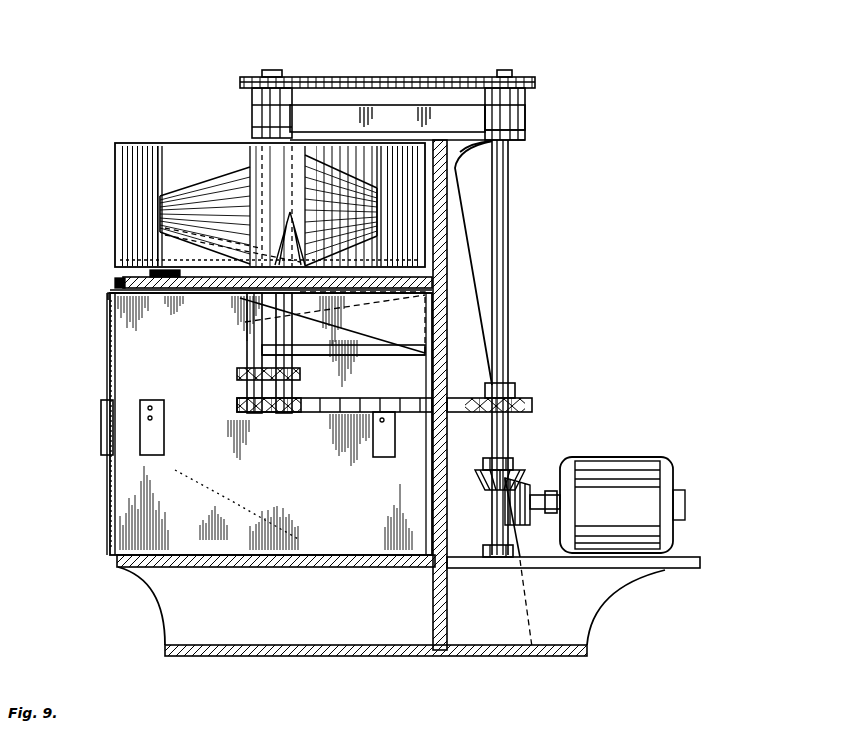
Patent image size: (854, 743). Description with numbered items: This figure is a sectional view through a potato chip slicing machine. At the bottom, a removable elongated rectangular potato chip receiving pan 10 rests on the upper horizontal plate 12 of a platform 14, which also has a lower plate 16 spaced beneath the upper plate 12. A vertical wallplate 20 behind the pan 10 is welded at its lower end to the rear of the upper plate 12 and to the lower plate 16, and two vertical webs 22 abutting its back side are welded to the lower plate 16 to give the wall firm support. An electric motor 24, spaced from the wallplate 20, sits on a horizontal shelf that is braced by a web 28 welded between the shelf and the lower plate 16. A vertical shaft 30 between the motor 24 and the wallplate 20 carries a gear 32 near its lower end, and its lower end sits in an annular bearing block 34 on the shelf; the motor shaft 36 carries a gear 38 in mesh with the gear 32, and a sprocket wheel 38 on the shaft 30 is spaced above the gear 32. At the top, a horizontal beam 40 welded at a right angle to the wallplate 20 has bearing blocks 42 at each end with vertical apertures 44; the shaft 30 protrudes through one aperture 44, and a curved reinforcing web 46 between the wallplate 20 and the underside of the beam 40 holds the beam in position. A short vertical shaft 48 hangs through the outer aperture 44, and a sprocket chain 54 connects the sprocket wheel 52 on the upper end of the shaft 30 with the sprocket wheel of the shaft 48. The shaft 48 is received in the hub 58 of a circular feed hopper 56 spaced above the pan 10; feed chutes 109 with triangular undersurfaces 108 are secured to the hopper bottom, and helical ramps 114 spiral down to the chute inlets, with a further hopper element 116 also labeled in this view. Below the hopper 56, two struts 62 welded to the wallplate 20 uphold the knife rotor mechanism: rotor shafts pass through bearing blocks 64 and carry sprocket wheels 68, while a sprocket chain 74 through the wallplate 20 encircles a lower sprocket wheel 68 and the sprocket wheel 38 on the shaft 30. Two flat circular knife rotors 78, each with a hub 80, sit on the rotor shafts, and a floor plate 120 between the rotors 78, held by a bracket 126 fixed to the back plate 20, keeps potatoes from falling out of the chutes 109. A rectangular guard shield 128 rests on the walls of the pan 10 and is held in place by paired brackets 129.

The potato chip receiving pan 10 is at (110, 534).
The upper horizontal plate 12 is at (216, 565).
The platform 14 is at (142, 611).
The lower plate 16 is at (330, 656).
The wallplate 20 is at (446, 332).
The vertical webs 22 is at (461, 190).
The electric motor 24 is at (622, 458).
The web 28 is at (600, 603).
The vertical shaft 30 is at (505, 318).
The gear 32 is at (510, 462).
The annular bearing block 34 is at (483, 550).
The motor shaft 36 is at (548, 512).
The gear / sprocket wheel 38 is at (240, 402).
The horizontal beam 40 is at (378, 107).
The bearing blocks 42 is at (520, 138).
The vertical apertures 44 is at (526, 118).
The curved reinforcing web 46 is at (455, 143).
The short vertical shaft 48 is at (270, 75).
The sprocket wheel 52 is at (512, 80).
The sprocket chain 54 is at (376, 77).
The feed hopper 56 is at (115, 236).
The hub 58 is at (255, 192).
The struts 62 is at (310, 356).
The bearing blocks 64 is at (262, 350).
The sprocket wheel 68 is at (237, 372).
The sprocket chain 74 is at (402, 398).
The knife rotors 78 is at (108, 300).
The hub 80 is at (250, 318).
The triangular undersurfaces 108 is at (195, 264).
The feed chutes 109 is at (178, 290).
The helical ramps 114 is at (307, 256).
The hub 116 is at (300, 162).
The floor plate 120 is at (115, 283).
The bracket 126 is at (332, 322).
The guard shield 128 is at (108, 378).
The brackets 129 is at (101, 405).